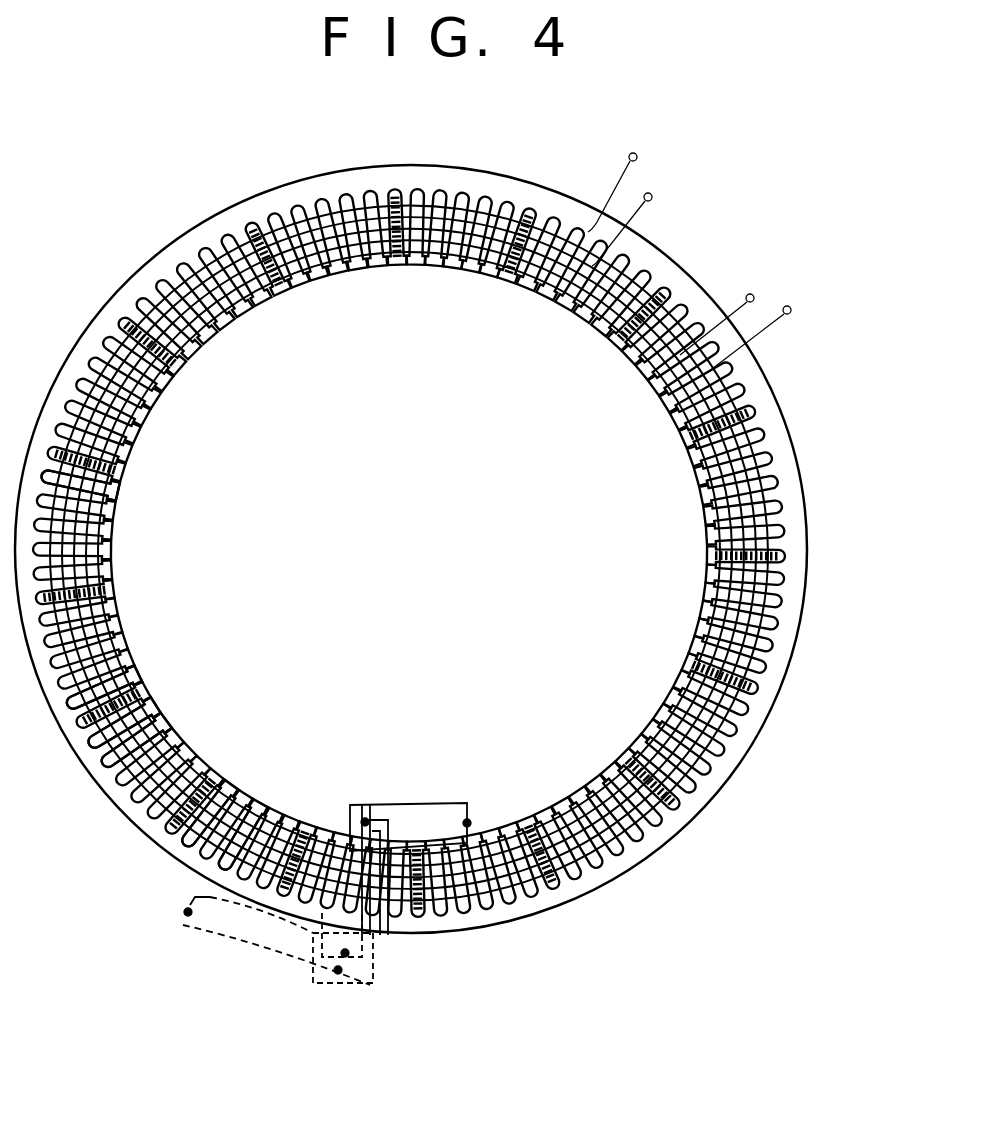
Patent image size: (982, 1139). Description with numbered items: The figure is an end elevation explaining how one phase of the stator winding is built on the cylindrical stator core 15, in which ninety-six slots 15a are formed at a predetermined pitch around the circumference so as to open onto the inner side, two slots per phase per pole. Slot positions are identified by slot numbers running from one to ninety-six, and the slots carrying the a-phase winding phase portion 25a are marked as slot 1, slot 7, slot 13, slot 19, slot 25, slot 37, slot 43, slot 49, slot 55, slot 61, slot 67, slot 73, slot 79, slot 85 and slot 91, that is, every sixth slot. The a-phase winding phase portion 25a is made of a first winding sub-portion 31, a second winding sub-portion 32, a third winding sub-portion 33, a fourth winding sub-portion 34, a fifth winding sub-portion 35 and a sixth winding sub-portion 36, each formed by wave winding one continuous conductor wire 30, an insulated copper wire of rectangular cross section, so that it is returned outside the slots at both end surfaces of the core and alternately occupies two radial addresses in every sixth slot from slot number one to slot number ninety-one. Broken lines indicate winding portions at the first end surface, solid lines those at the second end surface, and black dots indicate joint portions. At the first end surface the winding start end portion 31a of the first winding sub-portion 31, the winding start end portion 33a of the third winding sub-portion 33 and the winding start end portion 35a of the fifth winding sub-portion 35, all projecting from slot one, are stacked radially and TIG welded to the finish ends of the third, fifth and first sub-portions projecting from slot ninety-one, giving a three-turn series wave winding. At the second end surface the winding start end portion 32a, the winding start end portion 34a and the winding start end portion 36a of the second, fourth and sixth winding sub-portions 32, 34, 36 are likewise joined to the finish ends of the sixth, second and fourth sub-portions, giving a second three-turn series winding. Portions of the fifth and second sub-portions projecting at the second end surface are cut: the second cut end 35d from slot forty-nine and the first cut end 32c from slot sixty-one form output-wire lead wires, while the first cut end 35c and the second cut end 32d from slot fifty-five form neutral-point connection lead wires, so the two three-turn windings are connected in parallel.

The stator core 15 is at (193, 238).
The slots 15a is at (178, 287).
The continuous conductor wire 30 is at (105, 634).
The slot number 1 is at (297, 856).
The slot number 7 is at (193, 801).
The slot number 13 is at (120, 707).
The slot number 19 is at (88, 591).
The slot number 25 is at (102, 467).
The first winding sub-portion 31 is at (285, 830).
The slot number 37 is at (276, 273).
The slot number 43 is at (400, 243).
The slot number 49 is at (515, 259).
The slot number 55 is at (630, 325).
The slot number 61 is at (706, 431).
The slot number 67 is at (730, 554).
The slot number 73 is at (712, 673).
The slot number 79 is at (639, 778).
The slot number 85 is at (534, 844).
The slot number 91 is at (422, 872).
The a-phase winding phase portion 25a is at (108, 522).
The second winding sub-portion 32 is at (183, 765).
The third winding sub-portion 33 is at (263, 813).
The fourth winding sub-portion 34 is at (168, 738).
The fifth winding sub-portion 35 is at (228, 797).
The sixth winding sub-portion 36 is at (155, 712).
The second cut end 35d is at (640, 154).
The first cut end 35c is at (655, 195).
The second cut end 32d is at (753, 290).
The first cut end 32c is at (790, 305).
The winding start end portion 32a is at (475, 820).
The winding start end portion 36a is at (370, 815).
The winding start end portion 34a is at (376, 830).
The winding start end portion 31a is at (350, 953).
The winding start end portion 33a is at (343, 970).
The winding start end portion 35a is at (190, 918).